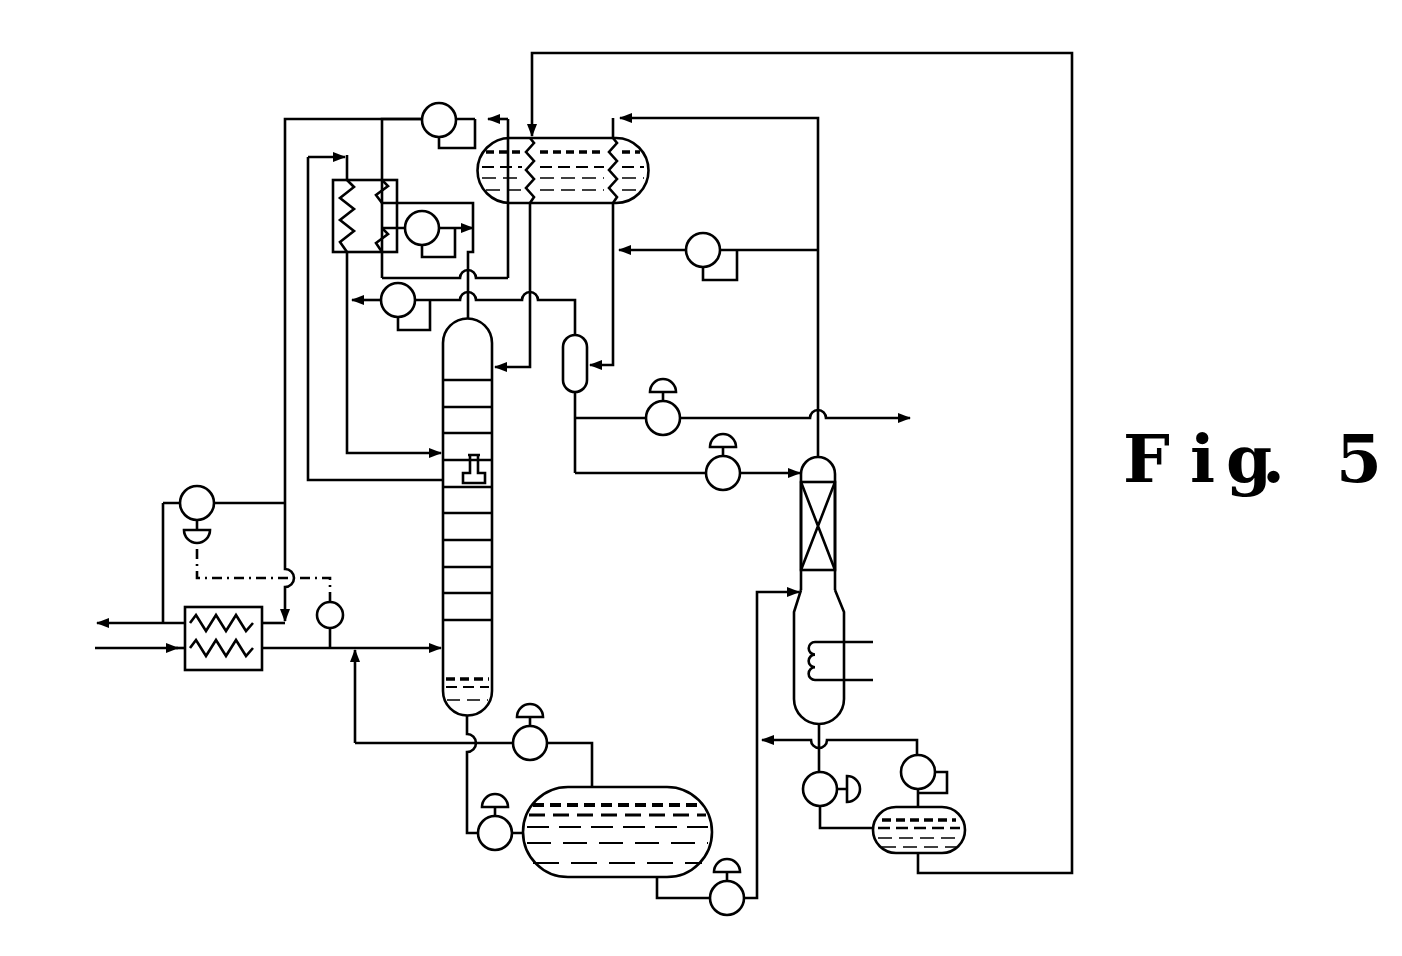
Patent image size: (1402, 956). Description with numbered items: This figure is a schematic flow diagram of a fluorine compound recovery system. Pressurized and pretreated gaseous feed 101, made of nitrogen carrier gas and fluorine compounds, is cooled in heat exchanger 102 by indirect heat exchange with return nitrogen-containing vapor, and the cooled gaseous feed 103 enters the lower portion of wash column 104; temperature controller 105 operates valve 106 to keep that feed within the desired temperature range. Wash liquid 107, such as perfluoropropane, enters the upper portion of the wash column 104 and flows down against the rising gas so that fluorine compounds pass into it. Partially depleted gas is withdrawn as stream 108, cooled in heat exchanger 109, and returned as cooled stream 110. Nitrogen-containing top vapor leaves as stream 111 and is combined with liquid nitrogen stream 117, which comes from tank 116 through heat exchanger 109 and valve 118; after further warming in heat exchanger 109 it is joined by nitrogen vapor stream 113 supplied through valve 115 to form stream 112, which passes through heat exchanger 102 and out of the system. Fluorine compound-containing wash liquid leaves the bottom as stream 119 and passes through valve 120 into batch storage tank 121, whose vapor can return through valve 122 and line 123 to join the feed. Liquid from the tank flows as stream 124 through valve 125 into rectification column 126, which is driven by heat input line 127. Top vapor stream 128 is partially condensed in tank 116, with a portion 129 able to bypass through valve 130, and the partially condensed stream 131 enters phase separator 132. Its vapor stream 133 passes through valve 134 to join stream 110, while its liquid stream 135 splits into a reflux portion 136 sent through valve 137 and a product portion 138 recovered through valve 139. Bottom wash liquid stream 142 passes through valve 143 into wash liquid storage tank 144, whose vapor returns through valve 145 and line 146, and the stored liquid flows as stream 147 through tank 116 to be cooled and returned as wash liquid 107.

The gaseous feed 101 is at (118, 653).
The heat exchanger 102 is at (208, 670).
The cooled gaseous feed 103 is at (297, 650).
The wash column 104 is at (499, 573).
The temperature controller 105 is at (345, 613).
The valve 106 is at (192, 483).
The wash liquid 107 is at (520, 368).
The stream 108 is at (340, 482).
The heat exchanger 109 is at (333, 243).
The cooled stream 110 is at (350, 447).
The stream 111 is at (470, 312).
The stream 112 is at (298, 119).
The nitrogen vapor stream 113 is at (403, 118).
The valve 115 is at (452, 102).
The tank 116 is at (650, 157).
The liquid nitrogen stream 117 is at (500, 212).
The valve 118 is at (405, 210).
The stream 119 is at (465, 728).
The valve 120 is at (482, 855).
The batch storage tank 121 is at (541, 877).
The valve 122 is at (548, 735).
The line 123 is at (398, 748).
The stream 124 is at (647, 893).
The valve 125 is at (743, 915).
The rectification column 126 is at (837, 525).
The heat input line 127 is at (857, 640).
The stream 128 is at (818, 445).
The portion 129 is at (772, 250).
The valve 130 is at (690, 263).
The partially condensed stream 131 is at (615, 323).
The phase separator 132 is at (562, 368).
The stream 133 is at (555, 300).
The valve 134 is at (385, 317).
The stream 135 is at (578, 402).
The portion 136 is at (612, 477).
The valve 137 is at (705, 490).
The portion 138 is at (595, 417).
The valve 139 is at (682, 408).
The stream 142 is at (820, 732).
The valve 143 is at (808, 803).
The wash liquid storage tank 144 is at (907, 853).
The valve 145 is at (938, 770).
The line 146 is at (868, 737).
The stream 147 is at (1073, 737).